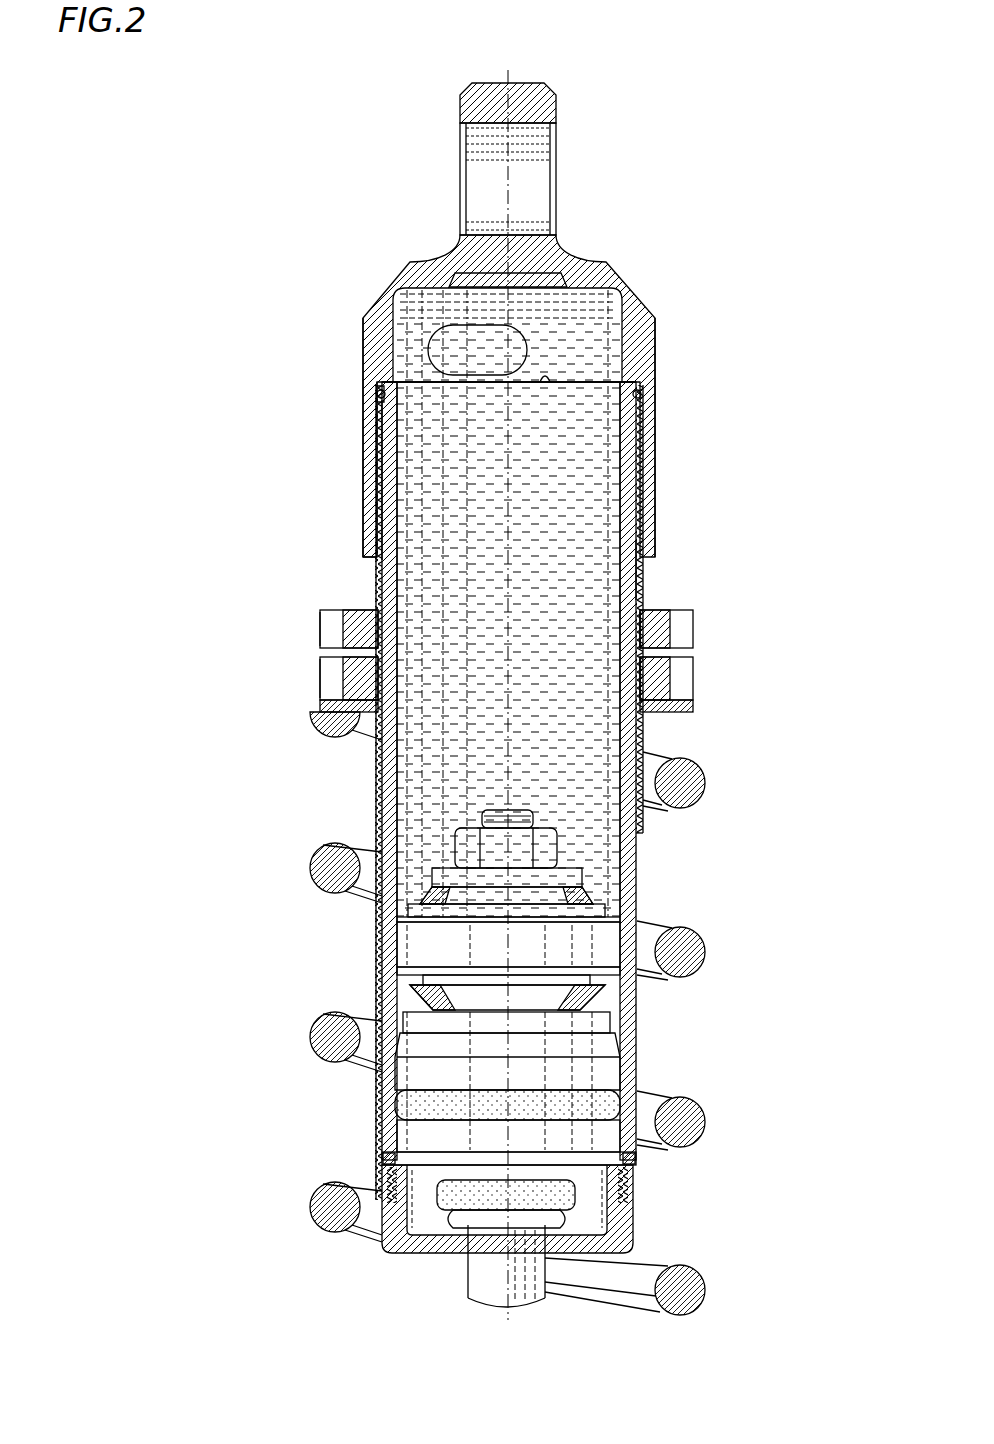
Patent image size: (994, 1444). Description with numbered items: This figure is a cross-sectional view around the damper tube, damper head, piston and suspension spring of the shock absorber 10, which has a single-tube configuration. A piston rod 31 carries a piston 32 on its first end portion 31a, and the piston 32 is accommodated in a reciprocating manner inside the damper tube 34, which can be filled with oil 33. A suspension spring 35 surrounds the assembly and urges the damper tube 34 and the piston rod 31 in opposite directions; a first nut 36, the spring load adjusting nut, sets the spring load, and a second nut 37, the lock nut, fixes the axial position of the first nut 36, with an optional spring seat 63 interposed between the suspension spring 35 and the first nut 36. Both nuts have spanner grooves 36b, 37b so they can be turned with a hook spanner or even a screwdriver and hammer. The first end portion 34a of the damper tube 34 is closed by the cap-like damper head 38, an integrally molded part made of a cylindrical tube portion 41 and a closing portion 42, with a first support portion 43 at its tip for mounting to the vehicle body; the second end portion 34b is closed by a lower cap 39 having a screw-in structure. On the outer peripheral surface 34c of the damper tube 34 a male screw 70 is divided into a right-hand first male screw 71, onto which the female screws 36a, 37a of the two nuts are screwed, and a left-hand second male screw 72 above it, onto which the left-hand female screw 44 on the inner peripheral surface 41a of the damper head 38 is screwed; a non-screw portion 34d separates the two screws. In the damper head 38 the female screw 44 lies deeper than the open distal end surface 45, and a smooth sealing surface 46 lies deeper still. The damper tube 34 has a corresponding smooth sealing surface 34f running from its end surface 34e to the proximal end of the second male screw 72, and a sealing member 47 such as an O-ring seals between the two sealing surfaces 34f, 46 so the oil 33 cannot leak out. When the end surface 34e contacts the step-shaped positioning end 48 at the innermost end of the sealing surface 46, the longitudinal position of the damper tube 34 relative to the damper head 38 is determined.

The shock absorber 10 is at (266, 186).
The piston rod 31 is at (483, 1279).
The first end portion of the piston rod 31a is at (510, 812).
The piston 32 is at (430, 950).
The oil 33 is at (552, 554).
The damper tube 34 is at (644, 1046).
The first end portion of the damper tube 34a is at (590, 385).
The second end portion of the damper tube 34b is at (640, 1182).
The outer peripheral surface of the damper tube 34c is at (638, 903).
The non-screw portion 34d is at (642, 562).
The end surface of the damper tube 34e is at (545, 382).
The sealing surface of the damper tube 34f is at (382, 440).
The suspension spring 35 is at (690, 790).
The first nut 36 is at (355, 680).
The female screw of the first nut 36a is at (640, 688).
The spanner groove of the first nut 36b is at (330, 680).
The second nut 37 is at (350, 628).
The female screw of the second nut 37a is at (640, 628).
The spanner groove of the second nut 37b is at (330, 628).
The damper head 38 is at (262, 255).
The lower cap 39 is at (385, 1250).
The tube portion 41 is at (375, 350).
The inner circumferential surface of housing 41a is at (372, 500).
The closing portion 42 is at (438, 278).
The first support portion 43 is at (478, 113).
The female screw of the damper head 44 is at (620, 490).
The open distal end surface 45 is at (378, 568).
The sealing surface of the damper head 46 is at (385, 381).
The sealing member 47 is at (380, 406).
The positioning end 48 is at (492, 388).
The spring seat 63 is at (330, 710).
The male screw 70 is at (765, 468).
The first male screw 71 is at (642, 600).
The second male screw 72 is at (642, 492).